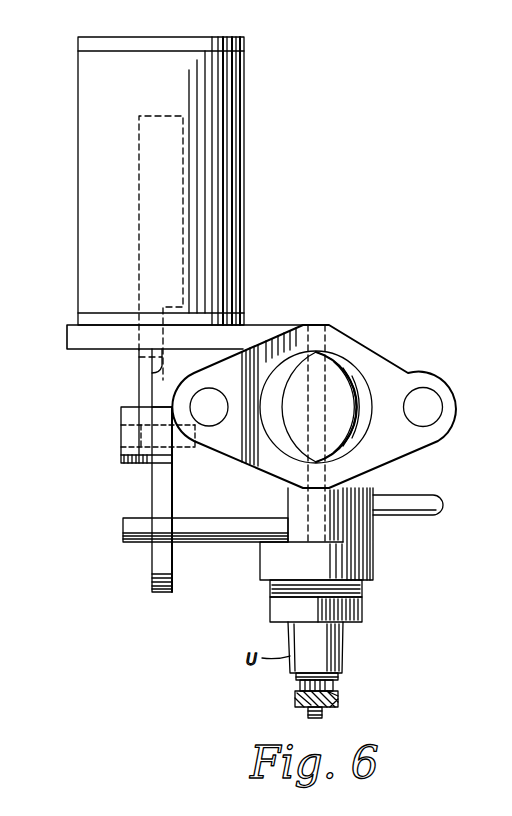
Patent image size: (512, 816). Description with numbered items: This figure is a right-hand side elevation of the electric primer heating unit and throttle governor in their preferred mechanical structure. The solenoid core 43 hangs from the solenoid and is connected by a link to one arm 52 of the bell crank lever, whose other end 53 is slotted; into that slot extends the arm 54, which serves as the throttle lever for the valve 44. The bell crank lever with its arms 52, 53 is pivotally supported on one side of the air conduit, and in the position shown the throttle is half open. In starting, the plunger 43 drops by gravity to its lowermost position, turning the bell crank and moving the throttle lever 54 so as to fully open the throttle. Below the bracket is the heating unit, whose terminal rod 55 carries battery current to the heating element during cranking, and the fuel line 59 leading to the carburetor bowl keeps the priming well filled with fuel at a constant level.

The solenoid core 43 is at (137, 381).
The valve 44 is at (331, 383).
The bell crank lever arm 52 is at (122, 463).
The bell crank lever arm 53 is at (156, 558).
The arm 54 is at (218, 535).
The terminal rod 55 is at (322, 712).
The fuel line 59 is at (417, 513).